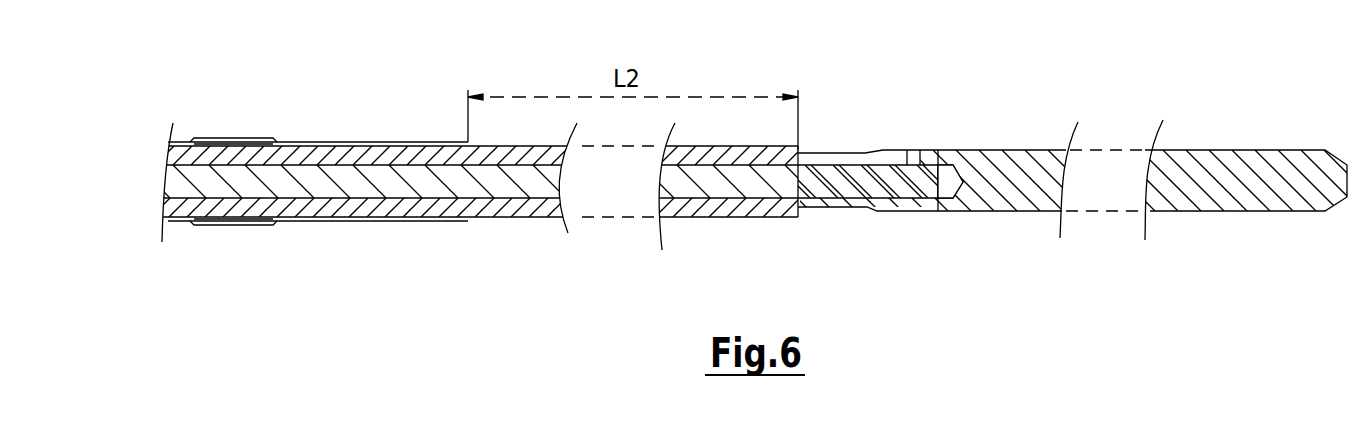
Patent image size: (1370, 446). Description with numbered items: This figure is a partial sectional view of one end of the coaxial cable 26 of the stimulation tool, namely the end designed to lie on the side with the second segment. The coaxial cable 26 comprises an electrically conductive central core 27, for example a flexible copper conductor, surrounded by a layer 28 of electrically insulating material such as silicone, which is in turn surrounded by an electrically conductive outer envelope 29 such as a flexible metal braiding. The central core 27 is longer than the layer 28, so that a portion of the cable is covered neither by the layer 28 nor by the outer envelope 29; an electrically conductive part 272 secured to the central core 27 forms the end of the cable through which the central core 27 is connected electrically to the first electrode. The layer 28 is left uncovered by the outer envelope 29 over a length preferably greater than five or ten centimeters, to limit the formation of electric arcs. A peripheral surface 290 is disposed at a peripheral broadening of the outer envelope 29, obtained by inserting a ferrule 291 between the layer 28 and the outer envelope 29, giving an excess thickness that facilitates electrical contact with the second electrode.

The coaxial cable 26 is at (1072, 184).
The central core 27 is at (887, 185).
The electrically conductive part 272 is at (1012, 198).
The layer of electrically insulating material 28 is at (357, 144).
The outer envelope 29 is at (423, 142).
The peripheral surface 290 is at (257, 140).
The ferrule 291 is at (226, 141).